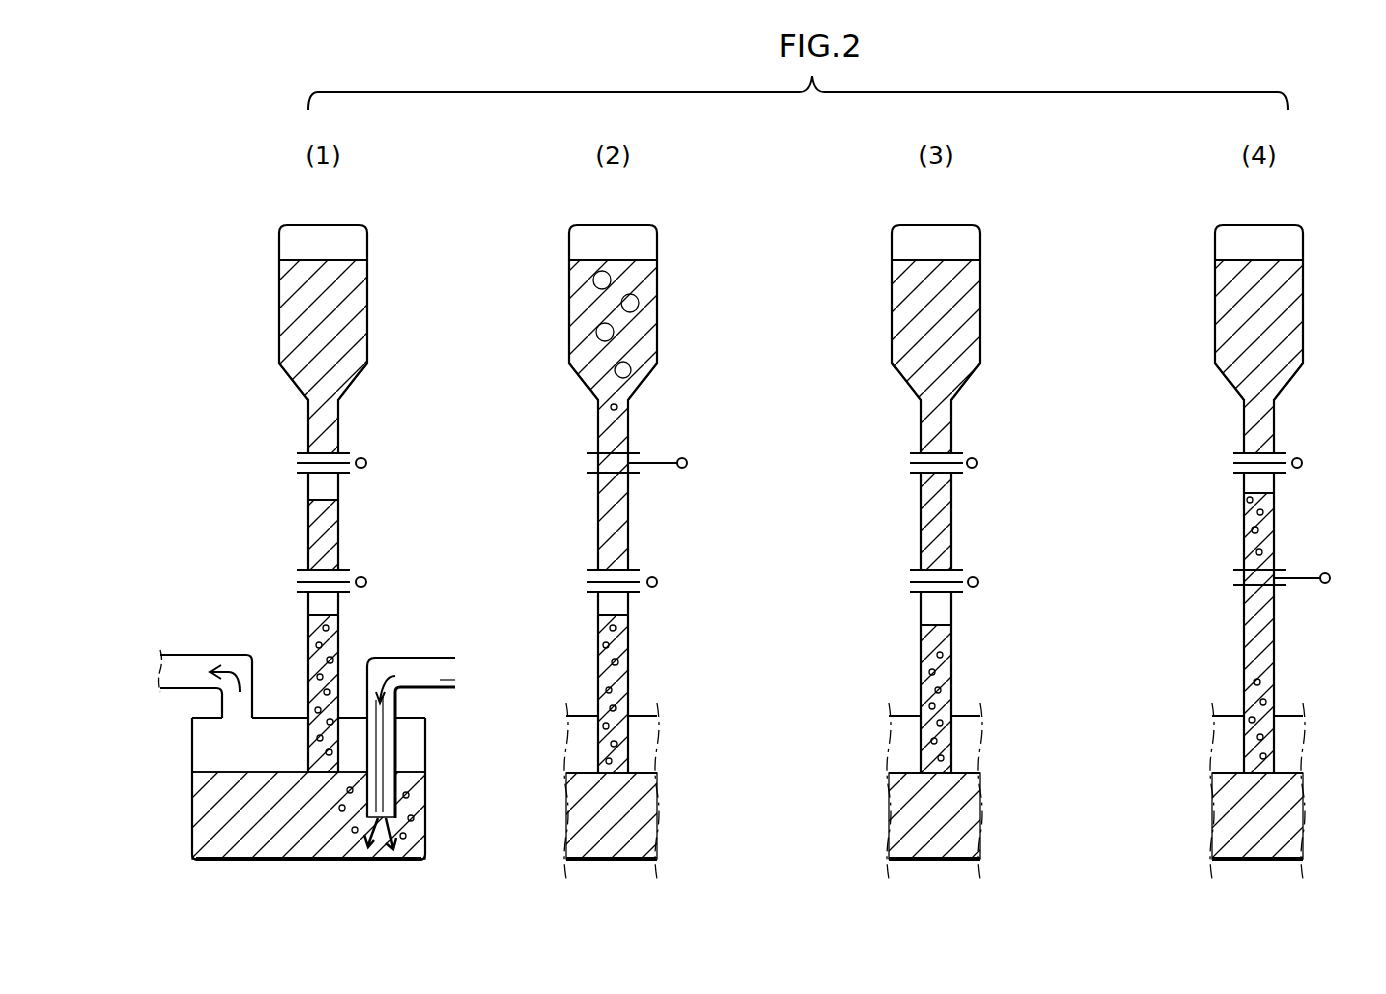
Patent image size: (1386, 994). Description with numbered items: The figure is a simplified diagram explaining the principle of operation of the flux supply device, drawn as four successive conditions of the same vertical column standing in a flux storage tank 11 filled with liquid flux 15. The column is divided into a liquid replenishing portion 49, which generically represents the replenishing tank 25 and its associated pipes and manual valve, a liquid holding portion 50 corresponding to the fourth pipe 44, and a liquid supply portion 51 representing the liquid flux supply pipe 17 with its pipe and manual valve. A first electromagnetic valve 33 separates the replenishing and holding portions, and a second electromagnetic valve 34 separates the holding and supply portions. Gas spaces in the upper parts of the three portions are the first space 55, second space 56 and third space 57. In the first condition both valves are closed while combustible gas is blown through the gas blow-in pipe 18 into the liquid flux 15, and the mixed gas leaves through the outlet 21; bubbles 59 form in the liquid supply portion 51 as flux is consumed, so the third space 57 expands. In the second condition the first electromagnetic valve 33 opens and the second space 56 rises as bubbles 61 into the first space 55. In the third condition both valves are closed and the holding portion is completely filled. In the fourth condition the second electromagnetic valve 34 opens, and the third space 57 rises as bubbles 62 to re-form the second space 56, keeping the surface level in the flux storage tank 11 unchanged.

The flux storage tank 11 is at (192, 752).
The liquid flux 15 is at (298, 318).
The liquid flux supply pipe 17 is at (340, 640).
The gas blow-in pipe 18 is at (432, 690).
The outlet 21 is at (188, 656).
The replenishing tank 25 is at (367, 300).
The first electromagnetic valve 33 is at (362, 458).
The second electromagnetic valve 34 is at (364, 578).
The fourth pipe 44 is at (340, 525).
The liquid replenishing portion 49 is at (820, 347).
The liquid holding portion 50 is at (825, 511).
The liquid supply portion 51 is at (828, 671).
The first space 55 is at (300, 240).
The second space 56 is at (305, 478).
The third space 57 is at (305, 603).
The bubbles 59 is at (318, 710).
The bubbles 61 is at (632, 328).
The bubbles 62 is at (1250, 555).